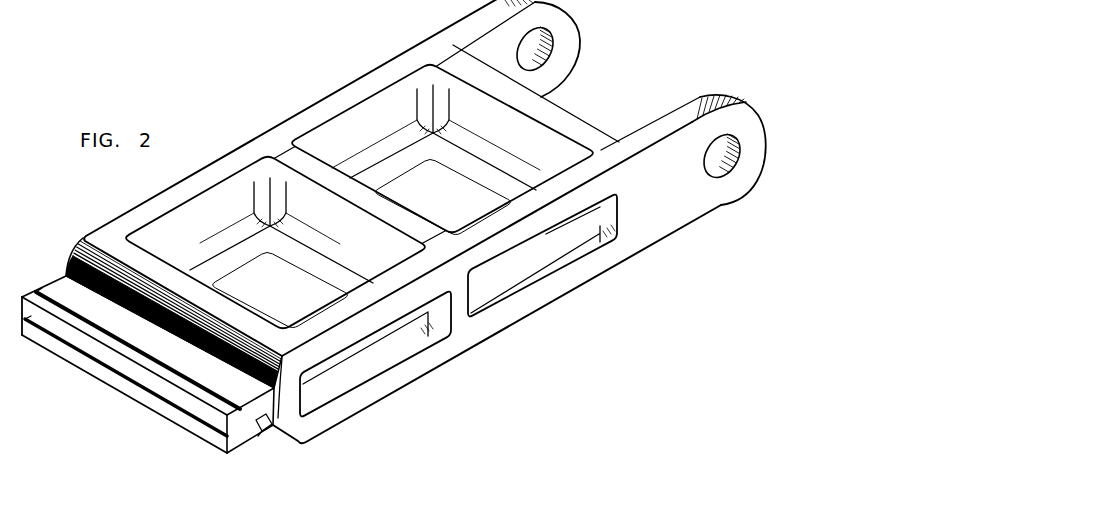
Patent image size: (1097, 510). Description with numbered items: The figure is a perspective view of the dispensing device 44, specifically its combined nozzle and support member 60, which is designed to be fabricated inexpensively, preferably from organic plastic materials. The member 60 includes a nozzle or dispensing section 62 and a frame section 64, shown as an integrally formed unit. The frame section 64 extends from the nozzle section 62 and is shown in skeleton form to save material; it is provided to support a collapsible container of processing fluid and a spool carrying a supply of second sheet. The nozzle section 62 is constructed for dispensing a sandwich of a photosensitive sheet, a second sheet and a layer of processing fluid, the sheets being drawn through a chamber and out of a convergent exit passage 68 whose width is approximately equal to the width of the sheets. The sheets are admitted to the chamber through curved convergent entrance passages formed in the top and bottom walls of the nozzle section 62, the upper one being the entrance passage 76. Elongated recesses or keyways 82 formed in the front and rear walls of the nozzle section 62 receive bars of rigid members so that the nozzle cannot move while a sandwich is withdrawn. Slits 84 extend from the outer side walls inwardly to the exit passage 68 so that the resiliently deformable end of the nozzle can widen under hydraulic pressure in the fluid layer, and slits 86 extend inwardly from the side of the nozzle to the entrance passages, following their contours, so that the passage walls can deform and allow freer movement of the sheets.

The dispensing device 44 is at (425, 221).
The combined nozzle and support member 60 is at (474, 351).
The frame section 64 is at (389, 386).
The slits 86 is at (262, 402).
The convergent entrance passage 76 is at (208, 321).
The convergent exit passage 68 is at (147, 391).
The elongated recesses or keyways 82 is at (97, 333).
The slits 84 is at (232, 440).
The nozzle or dispensing section 62 is at (252, 436).